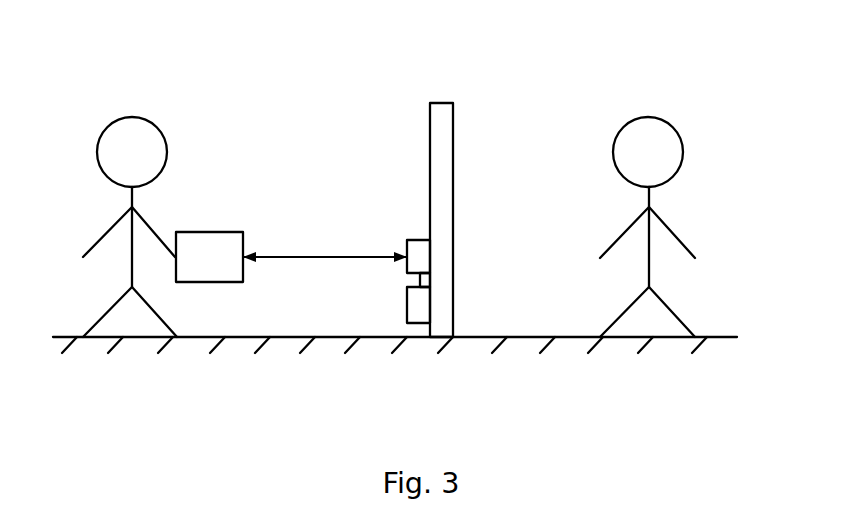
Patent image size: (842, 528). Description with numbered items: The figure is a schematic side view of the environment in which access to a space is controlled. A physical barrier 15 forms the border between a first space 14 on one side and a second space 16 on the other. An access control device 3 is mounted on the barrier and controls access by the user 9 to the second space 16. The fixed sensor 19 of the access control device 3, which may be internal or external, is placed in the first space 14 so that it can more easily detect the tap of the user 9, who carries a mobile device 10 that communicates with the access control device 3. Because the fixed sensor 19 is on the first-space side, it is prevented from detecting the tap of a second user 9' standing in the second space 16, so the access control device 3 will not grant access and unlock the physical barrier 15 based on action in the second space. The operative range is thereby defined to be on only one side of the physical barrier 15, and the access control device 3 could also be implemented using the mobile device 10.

The access control device 3 is at (407, 240).
The user 9 is at (158, 222).
The second user 9' is at (686, 227).
The mobile device 10 is at (195, 267).
The first space 14 is at (288, 187).
The physical barrier 15 is at (442, 118).
The second space 16 is at (513, 187).
The fixed sensor 19 is at (407, 320).